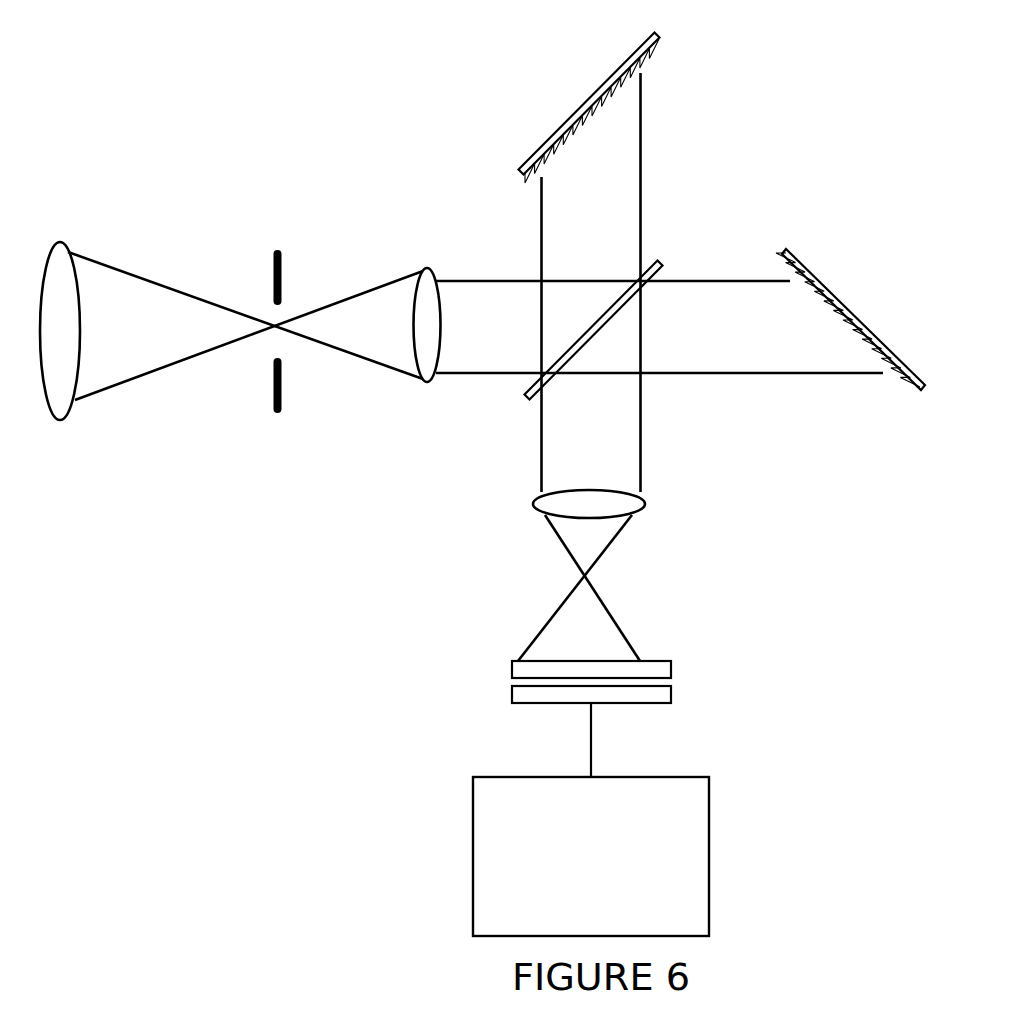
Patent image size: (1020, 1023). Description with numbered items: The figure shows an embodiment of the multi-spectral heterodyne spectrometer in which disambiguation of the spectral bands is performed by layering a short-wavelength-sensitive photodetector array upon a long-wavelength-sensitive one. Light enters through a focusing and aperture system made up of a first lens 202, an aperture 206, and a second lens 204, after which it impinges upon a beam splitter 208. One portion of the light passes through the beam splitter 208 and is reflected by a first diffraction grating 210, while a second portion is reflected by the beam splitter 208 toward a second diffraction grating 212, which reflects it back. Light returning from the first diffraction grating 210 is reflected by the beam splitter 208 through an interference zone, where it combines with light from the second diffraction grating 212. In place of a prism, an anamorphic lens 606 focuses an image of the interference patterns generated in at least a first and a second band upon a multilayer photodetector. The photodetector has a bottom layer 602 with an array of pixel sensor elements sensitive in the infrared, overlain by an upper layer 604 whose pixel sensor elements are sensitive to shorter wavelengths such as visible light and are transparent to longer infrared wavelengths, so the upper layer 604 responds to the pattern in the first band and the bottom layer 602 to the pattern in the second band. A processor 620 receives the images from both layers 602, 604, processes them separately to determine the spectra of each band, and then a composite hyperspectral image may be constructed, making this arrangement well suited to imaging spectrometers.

The lens 202 is at (62, 253).
The lens 204 is at (425, 281).
The aperture 206 is at (282, 258).
The beam splitter 208 is at (662, 262).
The first diffraction grating 210 is at (805, 272).
The second diffraction grating 212 is at (657, 35).
The bottom layer of multilayer photodetector 602 is at (512, 697).
The upper layer of multilayer photodetector 604 is at (671, 661).
The anamorphic lens 606 is at (645, 500).
The processor 620 is at (612, 884).